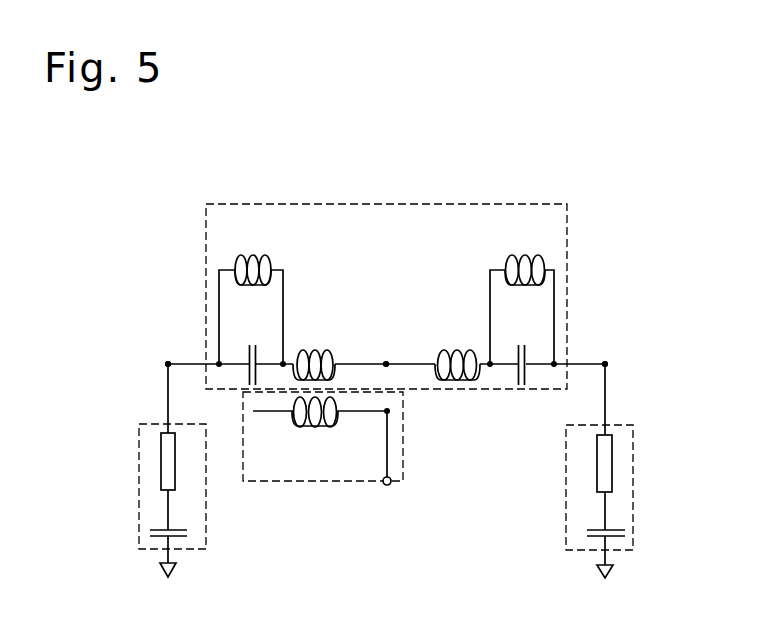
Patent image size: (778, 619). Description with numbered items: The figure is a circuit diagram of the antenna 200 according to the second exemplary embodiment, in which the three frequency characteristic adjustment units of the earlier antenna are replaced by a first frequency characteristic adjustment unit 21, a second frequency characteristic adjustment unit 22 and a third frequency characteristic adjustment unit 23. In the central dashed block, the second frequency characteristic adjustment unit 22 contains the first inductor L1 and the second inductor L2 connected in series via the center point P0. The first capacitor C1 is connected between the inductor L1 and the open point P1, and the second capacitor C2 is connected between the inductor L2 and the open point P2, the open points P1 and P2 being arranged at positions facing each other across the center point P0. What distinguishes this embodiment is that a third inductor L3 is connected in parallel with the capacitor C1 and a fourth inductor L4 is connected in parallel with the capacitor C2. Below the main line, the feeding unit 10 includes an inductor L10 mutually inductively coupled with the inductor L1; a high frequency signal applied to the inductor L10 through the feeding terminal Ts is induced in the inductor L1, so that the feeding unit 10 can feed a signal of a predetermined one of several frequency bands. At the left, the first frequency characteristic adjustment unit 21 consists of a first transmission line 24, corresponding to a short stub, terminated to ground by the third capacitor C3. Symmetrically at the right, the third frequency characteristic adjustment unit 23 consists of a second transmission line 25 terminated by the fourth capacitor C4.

The antenna 200 is at (385, 97).
The second frequency characteristic adjustment unit 22 is at (503, 204).
The first frequency characteristic adjustment unit 21 is at (140, 482).
The third frequency characteristic adjustment unit 23 is at (634, 488).
The transmission line 24 is at (161, 447).
The transmission line 25 is at (613, 447).
The feeding unit 10 is at (298, 482).
The open point P1 is at (168, 356).
The open point P2 is at (605, 356).
The center point P0 is at (389, 367).
The feeding terminal Ts is at (391, 486).
The first inductor L1 is at (314, 349).
The second inductor L2 is at (457, 349).
The third inductor L3 is at (251, 294).
The fourth inductor L4 is at (522, 294).
The inductor L10 is at (321, 426).
The first capacitor C1 is at (252, 351).
The second capacitor C2 is at (525, 351).
The third capacitor C3 is at (164, 520).
The fourth capacitor C4 is at (610, 520).